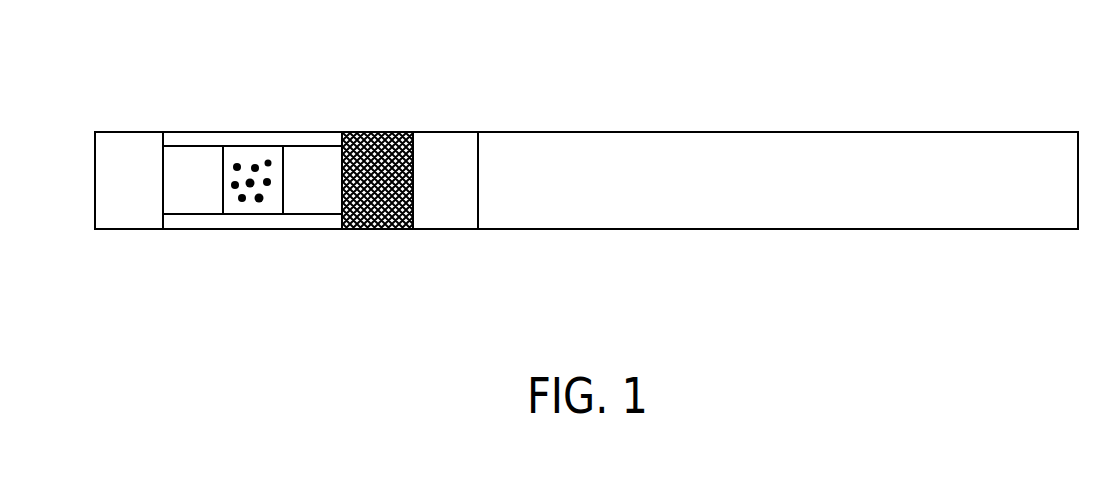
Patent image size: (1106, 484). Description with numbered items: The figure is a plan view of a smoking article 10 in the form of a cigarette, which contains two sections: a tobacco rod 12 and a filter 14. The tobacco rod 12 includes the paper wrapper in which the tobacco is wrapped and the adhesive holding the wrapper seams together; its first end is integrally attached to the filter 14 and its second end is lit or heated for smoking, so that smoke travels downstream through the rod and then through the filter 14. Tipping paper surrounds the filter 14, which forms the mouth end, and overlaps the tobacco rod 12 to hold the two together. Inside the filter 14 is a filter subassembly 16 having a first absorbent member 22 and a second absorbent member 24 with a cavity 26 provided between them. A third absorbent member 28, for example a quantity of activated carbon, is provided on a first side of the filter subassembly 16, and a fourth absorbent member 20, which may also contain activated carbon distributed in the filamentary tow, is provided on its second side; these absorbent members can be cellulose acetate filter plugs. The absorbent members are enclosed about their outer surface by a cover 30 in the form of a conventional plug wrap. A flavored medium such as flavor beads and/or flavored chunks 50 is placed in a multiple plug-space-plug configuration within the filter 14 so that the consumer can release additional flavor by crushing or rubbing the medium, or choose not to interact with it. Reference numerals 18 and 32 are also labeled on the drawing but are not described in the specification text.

The smoking article 10 is at (565, 229).
The tobacco rod 12 is at (682, 230).
The filter 14 is at (255, 231).
The filter subassembly 16 is at (312, 132).
The mouthpiece segment 18 is at (131, 149).
The fourth absorbent member 20 is at (444, 148).
The first absorbent member 22 is at (196, 154).
The second absorbent member 24 is at (321, 197).
The cavity 26 is at (255, 156).
The third absorbent member 28 is at (376, 143).
The cover 30 is at (181, 215).
The outer wall 32 is at (213, 218).
The flavor beads and/or flavored chunks 50 is at (266, 201).